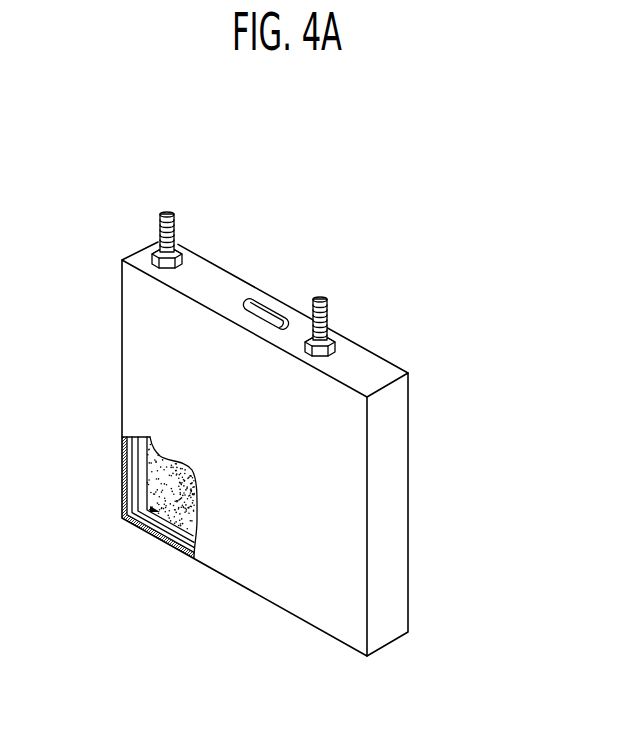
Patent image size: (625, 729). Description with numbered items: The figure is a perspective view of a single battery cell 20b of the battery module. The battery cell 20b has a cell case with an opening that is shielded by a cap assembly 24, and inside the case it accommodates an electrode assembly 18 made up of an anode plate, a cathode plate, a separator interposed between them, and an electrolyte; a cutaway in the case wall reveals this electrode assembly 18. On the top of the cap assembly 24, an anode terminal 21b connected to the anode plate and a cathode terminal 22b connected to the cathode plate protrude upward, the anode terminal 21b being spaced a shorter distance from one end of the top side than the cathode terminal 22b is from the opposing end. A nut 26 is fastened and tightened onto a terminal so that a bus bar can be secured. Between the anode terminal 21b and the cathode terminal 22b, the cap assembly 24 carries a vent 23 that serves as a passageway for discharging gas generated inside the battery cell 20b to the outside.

The electrode assembly 18 is at (132, 521).
The battery cell 20b is at (389, 576).
The anode terminal 21b is at (167, 211).
The cathode terminal 22b is at (320, 297).
The vent 23 is at (263, 312).
The cap assembly 24 is at (210, 278).
The nut 26 is at (151, 265).